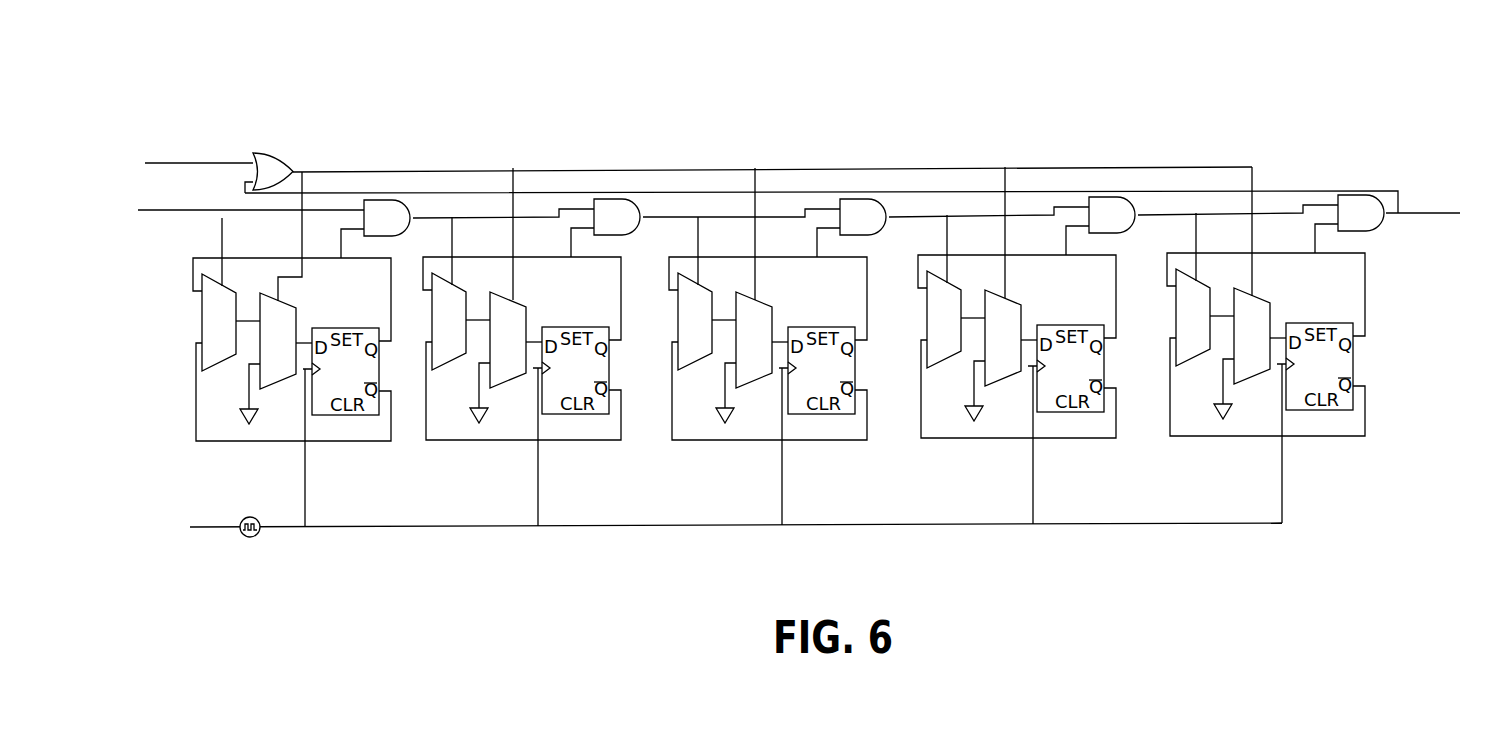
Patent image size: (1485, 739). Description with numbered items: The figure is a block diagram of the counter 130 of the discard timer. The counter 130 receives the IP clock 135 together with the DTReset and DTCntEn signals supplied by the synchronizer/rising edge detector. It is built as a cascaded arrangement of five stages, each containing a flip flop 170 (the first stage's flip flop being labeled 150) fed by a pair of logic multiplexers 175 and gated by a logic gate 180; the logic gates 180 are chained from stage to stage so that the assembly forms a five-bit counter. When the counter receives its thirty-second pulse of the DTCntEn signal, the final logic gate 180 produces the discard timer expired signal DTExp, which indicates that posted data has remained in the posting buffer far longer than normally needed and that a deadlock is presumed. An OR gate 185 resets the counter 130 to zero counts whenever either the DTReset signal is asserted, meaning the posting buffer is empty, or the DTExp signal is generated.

The counter 130 is at (204, 60).
The IP clock 135 is at (240, 536).
The first flip-flop 150 is at (372, 376).
The flip flops 170 is at (602, 375).
The logic multiplexers 175 is at (453, 368).
The logic gates 180 is at (636, 199).
The OR gate 185 is at (281, 153).